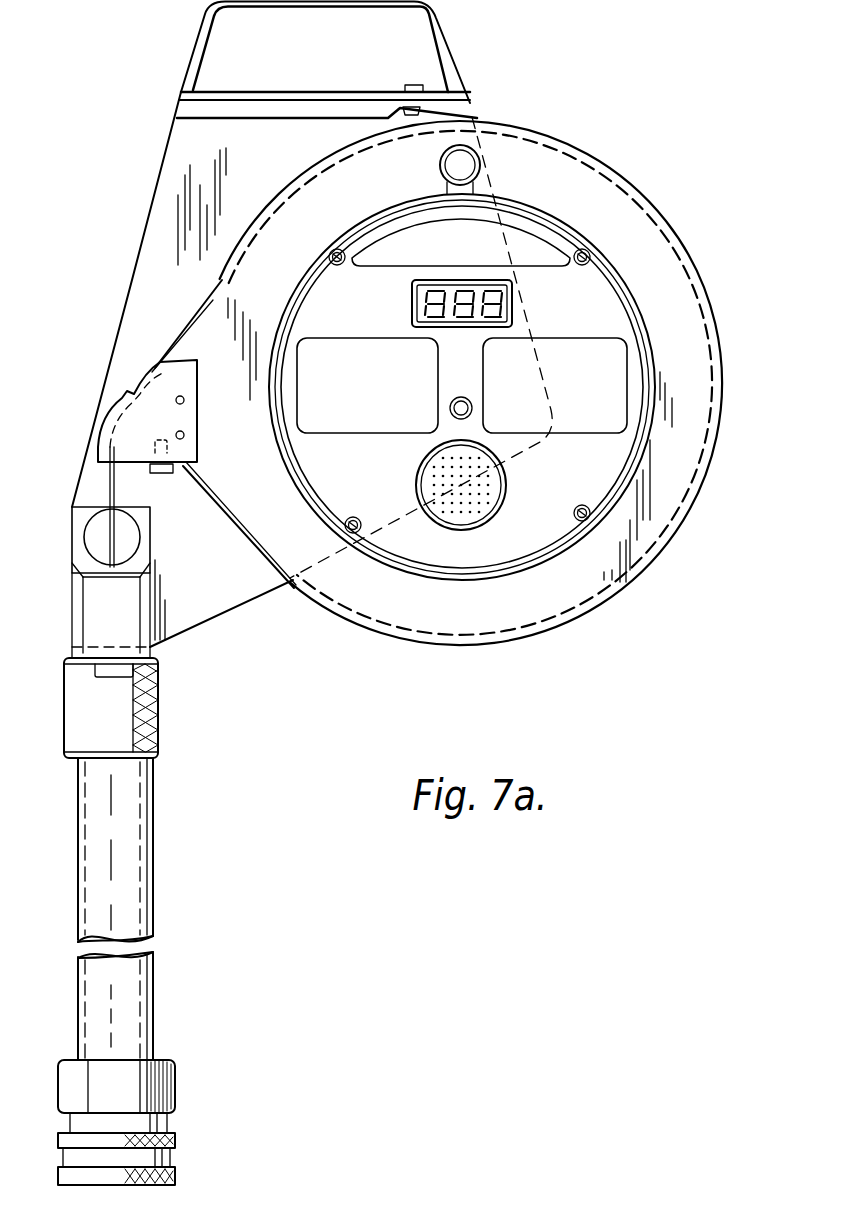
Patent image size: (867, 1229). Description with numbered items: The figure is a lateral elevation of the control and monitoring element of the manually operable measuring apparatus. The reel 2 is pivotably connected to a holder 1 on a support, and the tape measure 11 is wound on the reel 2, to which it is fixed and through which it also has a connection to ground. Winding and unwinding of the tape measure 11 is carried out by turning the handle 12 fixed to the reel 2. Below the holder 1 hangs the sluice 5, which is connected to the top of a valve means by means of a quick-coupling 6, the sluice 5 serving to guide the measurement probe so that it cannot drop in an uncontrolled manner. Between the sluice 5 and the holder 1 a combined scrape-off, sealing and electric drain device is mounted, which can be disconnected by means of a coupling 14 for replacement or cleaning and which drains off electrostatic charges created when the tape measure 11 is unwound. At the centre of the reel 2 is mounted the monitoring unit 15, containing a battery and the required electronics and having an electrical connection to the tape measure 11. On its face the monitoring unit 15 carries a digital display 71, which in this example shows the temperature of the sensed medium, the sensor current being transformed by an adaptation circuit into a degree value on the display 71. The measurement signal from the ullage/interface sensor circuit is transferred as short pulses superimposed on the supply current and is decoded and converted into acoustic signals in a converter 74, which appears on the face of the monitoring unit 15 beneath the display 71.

The holder 1 is at (437, 95).
The reel 2 is at (657, 238).
The sluice 5 is at (153, 852).
The quick-coupling 6 is at (158, 1090).
The tape measure 11 is at (185, 338).
The handle 12 is at (472, 158).
The coupling 14 is at (158, 733).
The monitoring unit 15 is at (575, 208).
The digital display 71 is at (506, 313).
The converter 74 is at (493, 482).